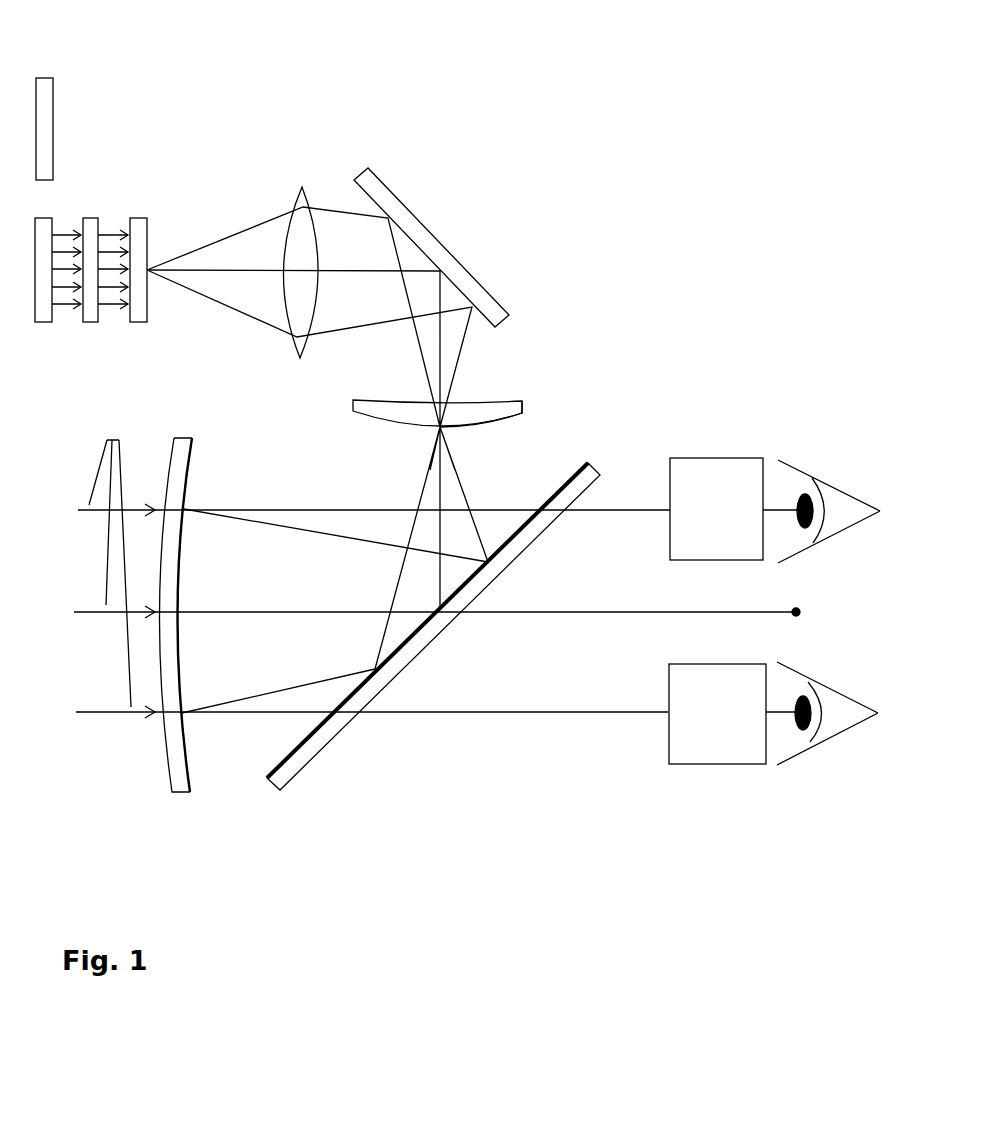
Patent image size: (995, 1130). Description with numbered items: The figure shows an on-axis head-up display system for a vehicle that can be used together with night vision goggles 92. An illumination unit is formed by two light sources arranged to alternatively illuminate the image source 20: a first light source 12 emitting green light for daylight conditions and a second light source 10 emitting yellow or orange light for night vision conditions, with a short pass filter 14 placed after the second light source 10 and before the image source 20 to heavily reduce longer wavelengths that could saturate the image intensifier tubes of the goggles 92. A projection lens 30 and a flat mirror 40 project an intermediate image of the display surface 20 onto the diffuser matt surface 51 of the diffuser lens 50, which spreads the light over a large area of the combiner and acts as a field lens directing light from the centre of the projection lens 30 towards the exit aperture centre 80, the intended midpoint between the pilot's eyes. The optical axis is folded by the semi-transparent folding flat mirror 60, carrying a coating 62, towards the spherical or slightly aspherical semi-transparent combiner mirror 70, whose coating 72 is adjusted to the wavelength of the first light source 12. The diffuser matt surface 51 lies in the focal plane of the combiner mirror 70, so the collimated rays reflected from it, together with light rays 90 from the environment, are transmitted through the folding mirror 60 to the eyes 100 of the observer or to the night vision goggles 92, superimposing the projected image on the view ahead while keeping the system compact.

The second light source 10 is at (40, 230).
The first light source 12 is at (45, 93).
The short pass filter 14 is at (88, 230).
The image source 20 is at (138, 232).
The projection lens 30 is at (300, 223).
The flat mirror 40 is at (388, 203).
The diffuser lens 50 is at (388, 410).
The diffuser matt surface 51 is at (497, 417).
The semi-transparent folding flat mirror 60 is at (585, 478).
The coating 62 is at (284, 748).
The semi-transparent combiner mirror 70 is at (180, 454).
The coating 72 is at (188, 764).
The exit aperture centre 80 is at (796, 612).
The light rays from the environment 90 is at (111, 554).
The night vision goggles 92 is at (743, 470).
The eyes 100 is at (810, 693).